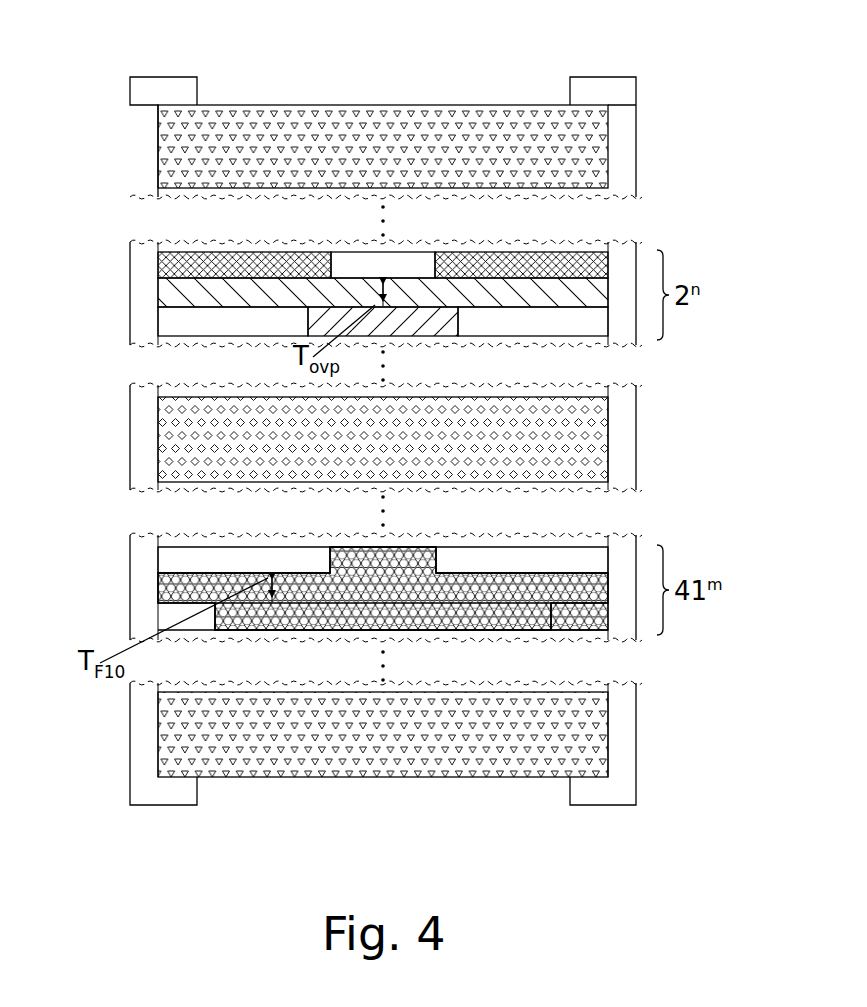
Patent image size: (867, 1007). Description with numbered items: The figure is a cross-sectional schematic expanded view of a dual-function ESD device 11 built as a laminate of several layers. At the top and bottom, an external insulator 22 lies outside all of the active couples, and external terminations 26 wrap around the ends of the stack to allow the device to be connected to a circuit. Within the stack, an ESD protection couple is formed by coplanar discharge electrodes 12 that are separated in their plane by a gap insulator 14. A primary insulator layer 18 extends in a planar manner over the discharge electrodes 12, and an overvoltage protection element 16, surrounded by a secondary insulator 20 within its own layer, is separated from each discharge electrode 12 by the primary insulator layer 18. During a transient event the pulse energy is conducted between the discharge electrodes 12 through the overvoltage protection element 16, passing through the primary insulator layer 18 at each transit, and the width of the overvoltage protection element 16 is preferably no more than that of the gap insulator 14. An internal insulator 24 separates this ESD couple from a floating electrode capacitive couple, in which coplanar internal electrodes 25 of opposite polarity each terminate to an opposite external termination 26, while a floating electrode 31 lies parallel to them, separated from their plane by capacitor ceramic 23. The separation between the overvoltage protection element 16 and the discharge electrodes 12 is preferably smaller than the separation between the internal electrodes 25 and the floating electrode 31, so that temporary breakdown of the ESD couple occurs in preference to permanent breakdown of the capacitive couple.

The dual-function ESD device 11 is at (402, 86).
The discharge electrodes 12 is at (258, 322).
The gap insulator 14 is at (428, 320).
The overvoltage protection element 16 is at (400, 268).
The primary insulator layer 18 is at (175, 298).
The secondary insulator 20 is at (200, 260).
The external insulator 22 is at (480, 140).
The capacitor ceramic 23 is at (195, 590).
The internal insulator 24 is at (428, 422).
The coplanar internal electrodes 25 is at (222, 562).
The external terminations 26 is at (155, 785).
The floating electrode 31 is at (525, 610).